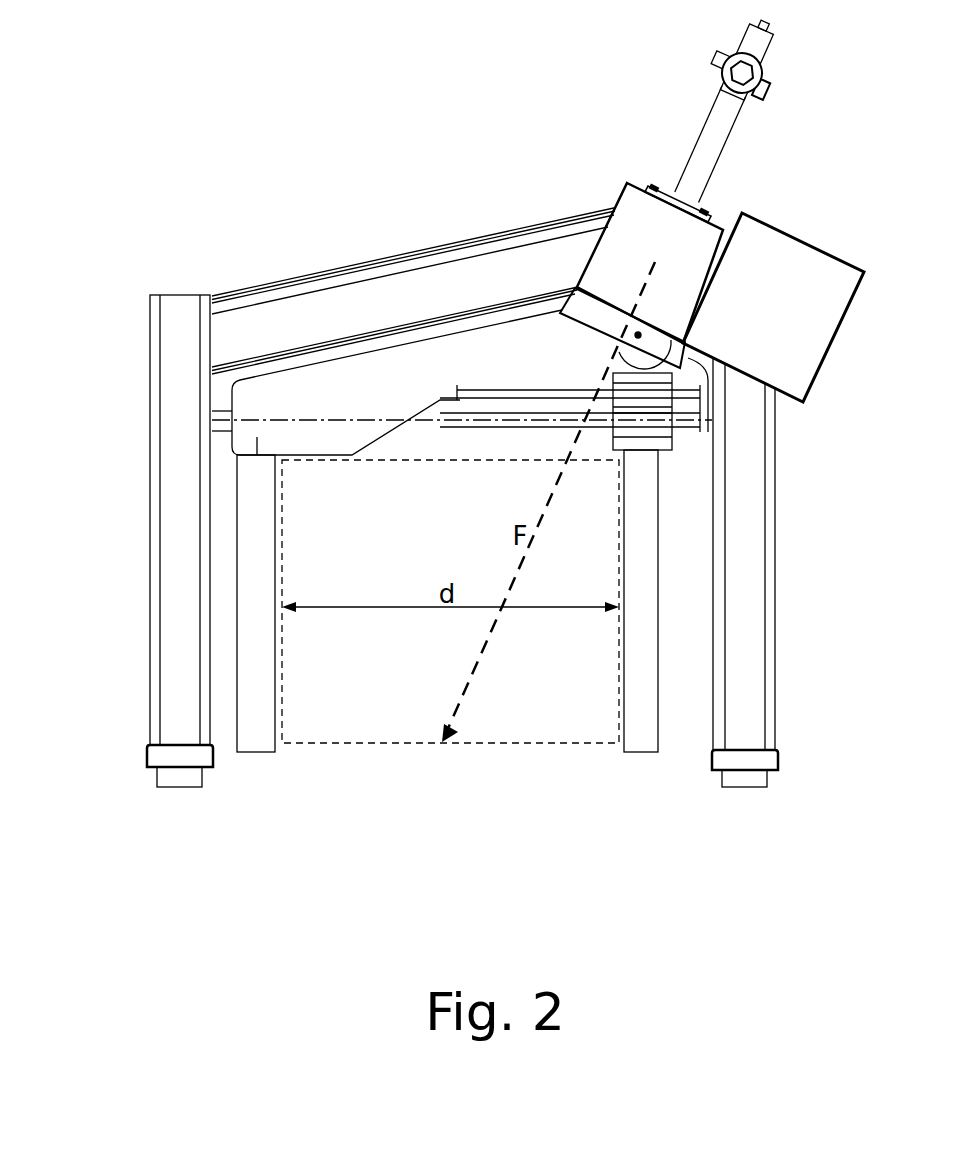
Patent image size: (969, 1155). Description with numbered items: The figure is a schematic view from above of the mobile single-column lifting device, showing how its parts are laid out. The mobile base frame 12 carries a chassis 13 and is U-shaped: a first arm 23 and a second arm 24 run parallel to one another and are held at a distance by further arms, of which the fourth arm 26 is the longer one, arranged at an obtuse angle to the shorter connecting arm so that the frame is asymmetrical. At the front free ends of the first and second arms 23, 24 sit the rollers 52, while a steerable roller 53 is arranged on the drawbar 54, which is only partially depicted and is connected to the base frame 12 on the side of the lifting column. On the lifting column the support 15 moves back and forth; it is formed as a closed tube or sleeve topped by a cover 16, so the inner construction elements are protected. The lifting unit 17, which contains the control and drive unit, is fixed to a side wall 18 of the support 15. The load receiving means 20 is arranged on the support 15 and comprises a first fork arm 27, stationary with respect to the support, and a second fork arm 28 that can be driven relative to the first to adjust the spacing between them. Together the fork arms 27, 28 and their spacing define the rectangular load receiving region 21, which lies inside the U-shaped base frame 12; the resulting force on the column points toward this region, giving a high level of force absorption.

The base frame 12 is at (240, 272).
The chassis 13 is at (126, 780).
The support 15 is at (713, 228).
The cover 16 is at (632, 205).
The lifting unit 17 is at (836, 247).
The side wall 18 is at (728, 259).
The load receiving means 20 is at (366, 365).
The load receiving region 21 is at (385, 745).
The first arm 23 is at (150, 565).
The second arm 24 is at (777, 560).
The fourth arm 26 is at (485, 237).
The first fork arm 27 is at (252, 753).
The second fork arm 28 is at (660, 682).
The rollers 52 is at (182, 788).
The steerable roller 53 is at (770, 40).
The drawbar 54 is at (696, 108).